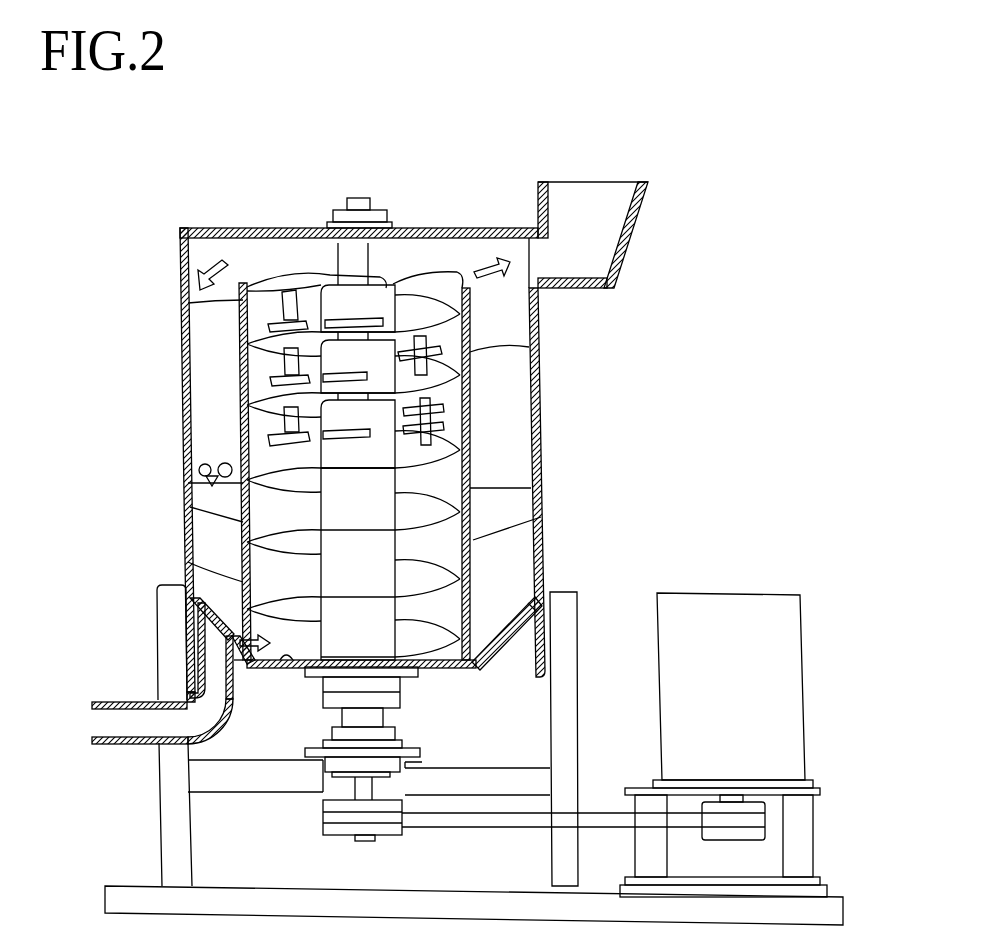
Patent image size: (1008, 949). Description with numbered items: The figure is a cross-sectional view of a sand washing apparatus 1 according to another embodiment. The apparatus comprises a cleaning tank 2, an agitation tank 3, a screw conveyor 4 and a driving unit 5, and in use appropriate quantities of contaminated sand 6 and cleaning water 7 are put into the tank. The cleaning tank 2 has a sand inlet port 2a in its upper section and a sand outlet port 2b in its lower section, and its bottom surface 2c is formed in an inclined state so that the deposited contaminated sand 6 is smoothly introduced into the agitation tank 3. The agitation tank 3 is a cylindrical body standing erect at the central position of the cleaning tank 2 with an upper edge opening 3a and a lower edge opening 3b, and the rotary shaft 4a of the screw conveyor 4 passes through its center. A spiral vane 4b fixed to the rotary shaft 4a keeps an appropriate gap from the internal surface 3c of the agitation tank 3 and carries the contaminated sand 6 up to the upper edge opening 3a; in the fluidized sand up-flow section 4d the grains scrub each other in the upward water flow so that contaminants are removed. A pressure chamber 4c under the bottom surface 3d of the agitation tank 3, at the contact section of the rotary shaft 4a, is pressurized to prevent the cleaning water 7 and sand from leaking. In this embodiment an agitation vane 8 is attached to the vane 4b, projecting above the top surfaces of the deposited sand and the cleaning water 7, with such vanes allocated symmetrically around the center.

The sand washing apparatus 1 is at (110, 427).
The cleaning tank 2 is at (556, 467).
The sand inlet port 2a is at (642, 218).
The sand outlet port 2b is at (123, 745).
The conical bottom wall 2c is at (523, 628).
The agitation tank 3 is at (484, 398).
The upper edge opening 3a is at (437, 275).
The lower edge opening 3b is at (240, 668).
The internal surface 3c is at (182, 505).
The bottom surface 3d is at (289, 668).
The screw conveyor 4 is at (243, 357).
The rotary shaft 4a is at (529, 347).
The spiral vane 4b is at (541, 517).
The pressure chamber 4c is at (400, 687).
The fluidized sand up-flow section 4d is at (188, 301).
The driving unit 5 is at (808, 654).
The contaminated sand 6 is at (188, 562).
The cleaning water 7 is at (182, 458).
The agitation vane 8 is at (330, 318).